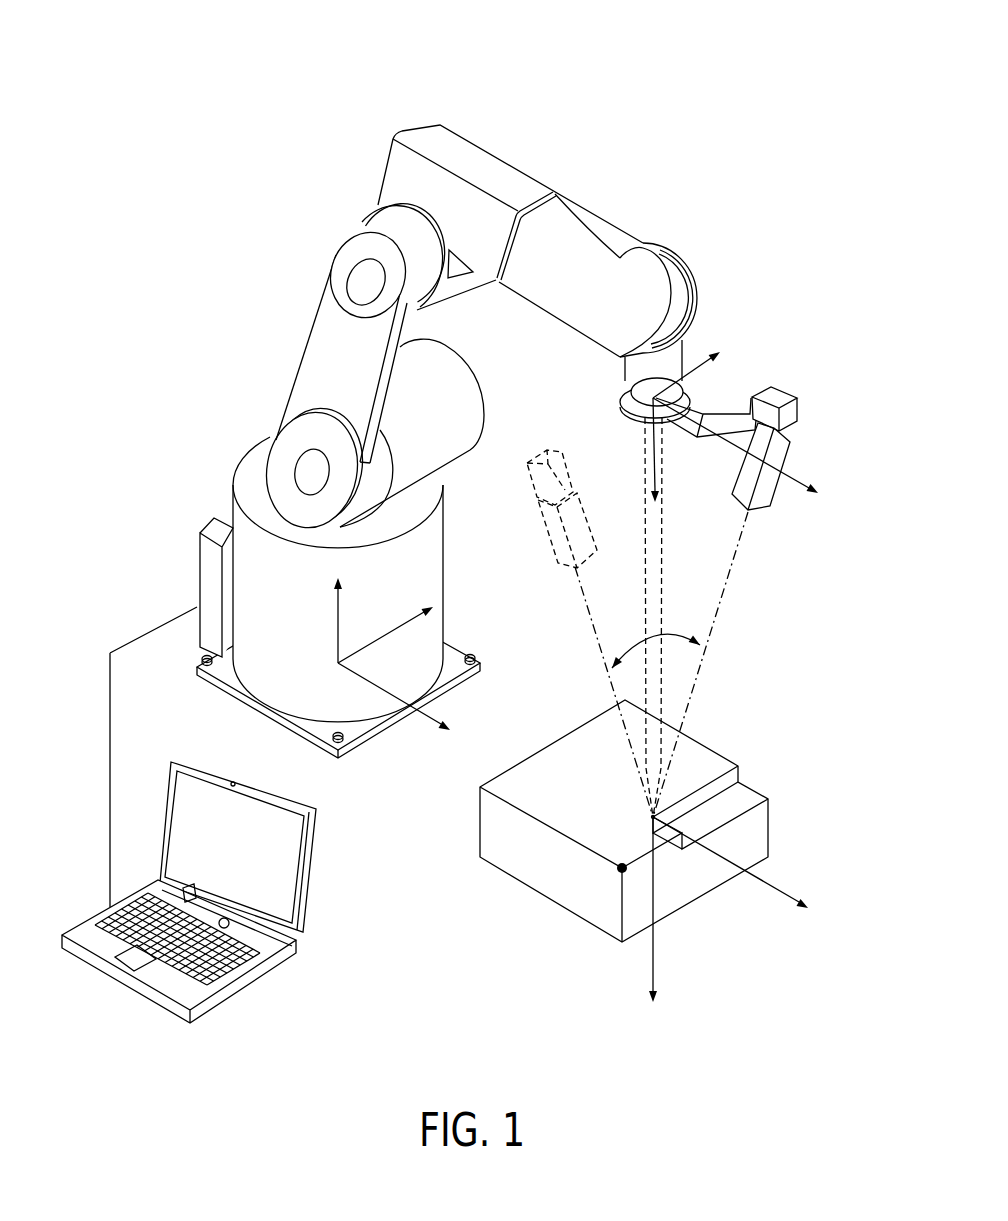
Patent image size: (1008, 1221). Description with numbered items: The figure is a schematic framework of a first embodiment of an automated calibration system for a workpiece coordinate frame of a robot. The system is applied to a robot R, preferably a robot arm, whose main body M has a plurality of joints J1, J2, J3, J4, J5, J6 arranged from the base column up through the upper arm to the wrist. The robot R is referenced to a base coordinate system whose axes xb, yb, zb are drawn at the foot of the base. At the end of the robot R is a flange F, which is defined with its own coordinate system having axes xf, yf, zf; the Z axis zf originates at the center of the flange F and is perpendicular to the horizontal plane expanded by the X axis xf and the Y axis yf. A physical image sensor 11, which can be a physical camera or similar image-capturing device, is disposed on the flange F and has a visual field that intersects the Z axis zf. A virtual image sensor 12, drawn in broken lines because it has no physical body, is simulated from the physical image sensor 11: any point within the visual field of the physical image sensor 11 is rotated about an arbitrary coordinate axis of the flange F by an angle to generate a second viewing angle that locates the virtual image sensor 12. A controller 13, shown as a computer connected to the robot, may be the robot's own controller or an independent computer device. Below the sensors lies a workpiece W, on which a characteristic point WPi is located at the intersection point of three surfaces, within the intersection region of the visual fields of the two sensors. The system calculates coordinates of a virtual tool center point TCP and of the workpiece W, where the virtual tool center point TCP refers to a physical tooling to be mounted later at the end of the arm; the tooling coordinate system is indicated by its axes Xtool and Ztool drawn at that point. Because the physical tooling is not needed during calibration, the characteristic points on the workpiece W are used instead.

The robot R is at (467, 105).
The main body M is at (393, 172).
The joint J1 is at (277, 607).
The joint J2 is at (307, 467).
The joint J3 is at (367, 282).
The joint J4 is at (520, 210).
The joint J5 is at (660, 277).
The joint J6 is at (645, 393).
The flange F is at (637, 410).
The physical image sensor 11 is at (787, 457).
The virtual image sensor 12 is at (550, 538).
The controller 13 is at (227, 985).
The workpiece W is at (513, 863).
The characteristic point WPi is at (595, 881).
The virtual tool center point TCP is at (653, 817).
The X axis of base coordinate system xb is at (418, 706).
The Y axis of base coordinate system yb is at (385, 635).
The Z axis of base coordinate system zb is at (356, 614).
The X axis of flange coordinate system xf is at (756, 458).
The Y axis of flange coordinate system yf is at (706, 364).
The Z axis of flange coordinate system zf is at (672, 452).
The X axis of tooling coordinate system Xtool is at (731, 879).
The Z axis of tooling coordinate system Ztool is at (668, 930).